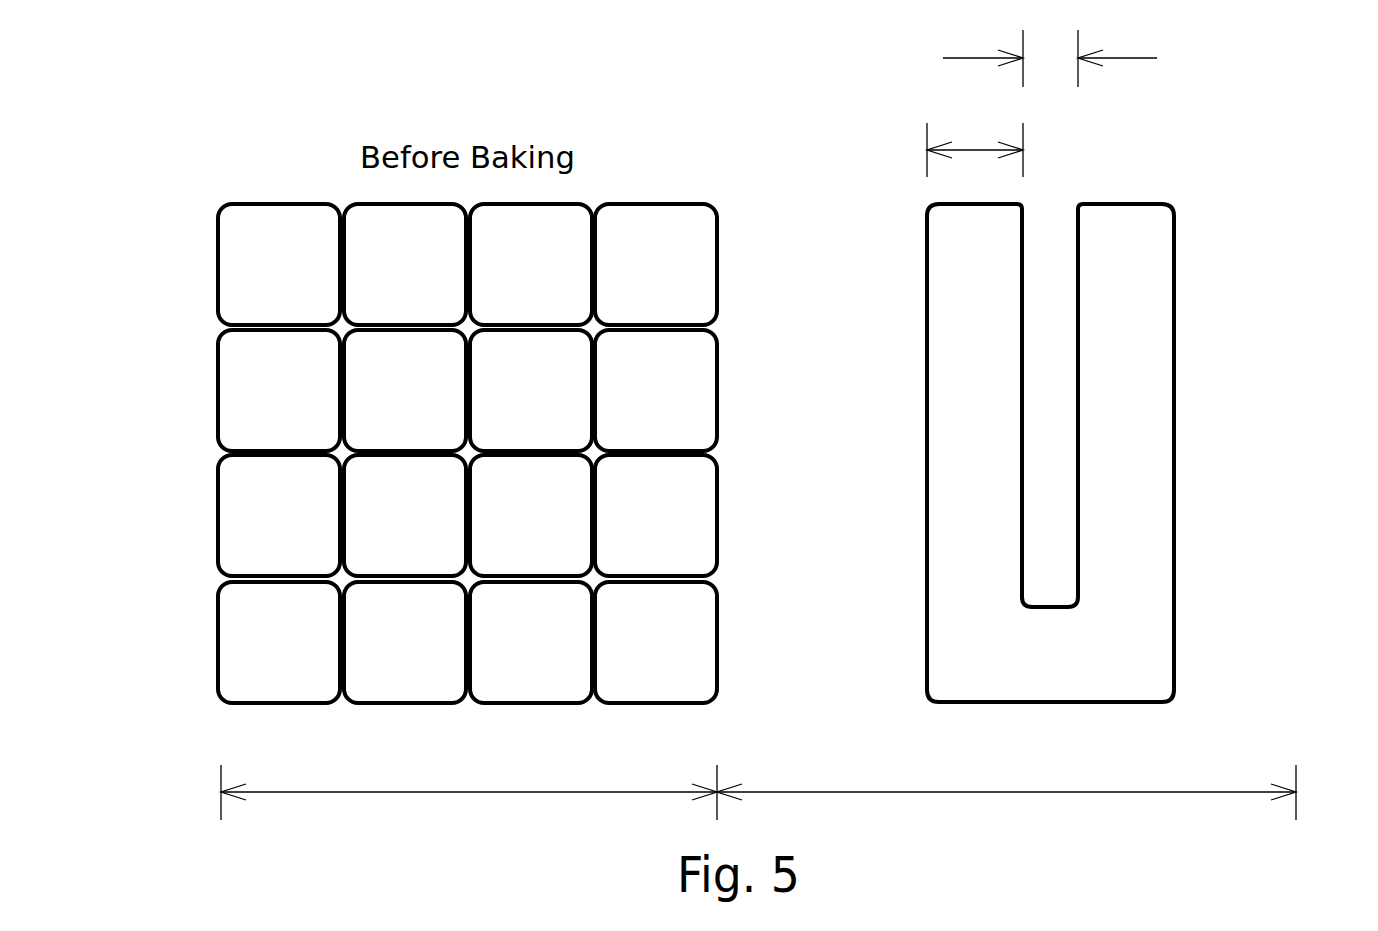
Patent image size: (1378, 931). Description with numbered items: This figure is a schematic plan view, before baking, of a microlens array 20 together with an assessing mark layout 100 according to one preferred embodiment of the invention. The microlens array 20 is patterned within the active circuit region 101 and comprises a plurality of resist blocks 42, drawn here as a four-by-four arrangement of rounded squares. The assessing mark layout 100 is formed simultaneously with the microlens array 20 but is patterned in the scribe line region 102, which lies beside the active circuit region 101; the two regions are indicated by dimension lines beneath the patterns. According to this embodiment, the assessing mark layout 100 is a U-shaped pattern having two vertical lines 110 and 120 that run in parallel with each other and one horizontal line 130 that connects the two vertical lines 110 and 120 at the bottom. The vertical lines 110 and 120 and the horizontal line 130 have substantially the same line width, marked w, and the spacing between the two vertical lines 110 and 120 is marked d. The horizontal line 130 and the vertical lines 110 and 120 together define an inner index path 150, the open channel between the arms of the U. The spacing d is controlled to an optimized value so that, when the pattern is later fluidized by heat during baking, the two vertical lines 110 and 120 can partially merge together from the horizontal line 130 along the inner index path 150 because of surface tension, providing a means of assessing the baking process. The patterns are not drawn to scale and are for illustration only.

The microlens array 20 is at (394, 425).
The resist block 42 is at (650, 230).
The assessing mark layout 100 is at (1110, 393).
The vertical line 110 is at (957, 517).
The vertical line 120 is at (1142, 443).
The horizontal line 130 is at (1112, 683).
The inner index path 150 is at (1052, 223).
The active circuit region 101 is at (469, 791).
The scribe line region 102 is at (1006, 790).